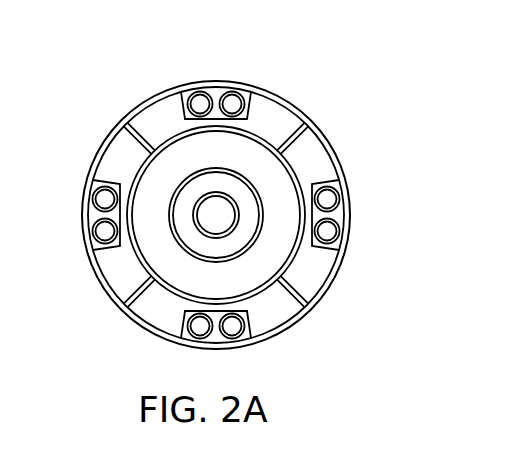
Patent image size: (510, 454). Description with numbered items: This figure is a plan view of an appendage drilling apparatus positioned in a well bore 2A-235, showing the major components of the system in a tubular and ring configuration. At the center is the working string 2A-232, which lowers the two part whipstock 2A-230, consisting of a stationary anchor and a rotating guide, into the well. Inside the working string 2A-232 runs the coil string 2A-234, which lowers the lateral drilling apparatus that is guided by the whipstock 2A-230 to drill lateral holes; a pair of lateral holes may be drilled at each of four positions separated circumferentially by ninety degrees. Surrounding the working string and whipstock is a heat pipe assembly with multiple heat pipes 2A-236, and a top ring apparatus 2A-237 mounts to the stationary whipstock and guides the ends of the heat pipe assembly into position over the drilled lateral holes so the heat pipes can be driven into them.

The two part whipstock 2A-230 is at (275, 270).
The working string 2A-232 is at (187, 182).
The coil string 2A-234 is at (193, 217).
The well bore 2A-235 is at (352, 211).
The heat pipes 2A-236 is at (235, 99).
The top ring apparatus 2A-237 is at (288, 107).